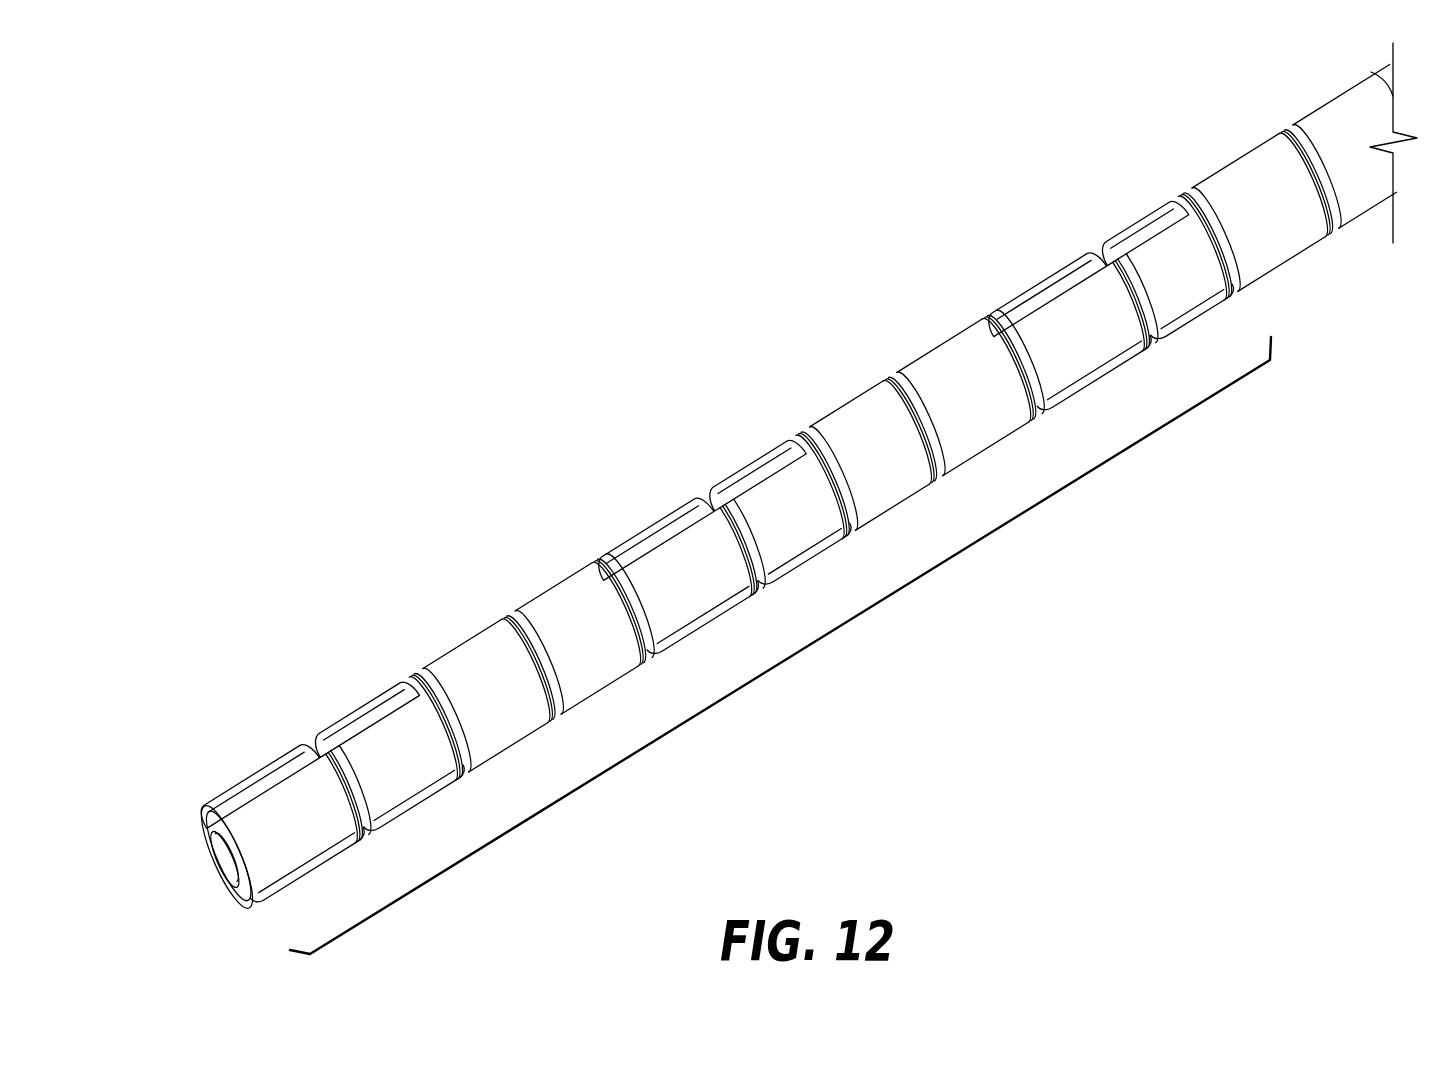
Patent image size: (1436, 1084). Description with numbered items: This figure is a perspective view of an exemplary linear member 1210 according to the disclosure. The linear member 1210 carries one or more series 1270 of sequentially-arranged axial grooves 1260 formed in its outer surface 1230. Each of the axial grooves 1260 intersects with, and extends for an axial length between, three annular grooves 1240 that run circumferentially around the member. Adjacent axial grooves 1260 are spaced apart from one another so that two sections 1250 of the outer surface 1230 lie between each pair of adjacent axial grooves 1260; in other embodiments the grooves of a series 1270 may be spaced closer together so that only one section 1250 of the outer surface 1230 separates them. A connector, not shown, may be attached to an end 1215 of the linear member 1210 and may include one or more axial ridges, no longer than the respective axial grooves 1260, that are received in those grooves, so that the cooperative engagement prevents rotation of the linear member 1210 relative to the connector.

The linear member 1210 is at (412, 302).
The end 1215 is at (246, 715).
The outer surface 1230 is at (863, 390).
The annular grooves 1240 is at (590, 551).
The sections 1250 is at (472, 647).
The axial grooves 1260 is at (383, 702).
The series 1270 is at (205, 853).